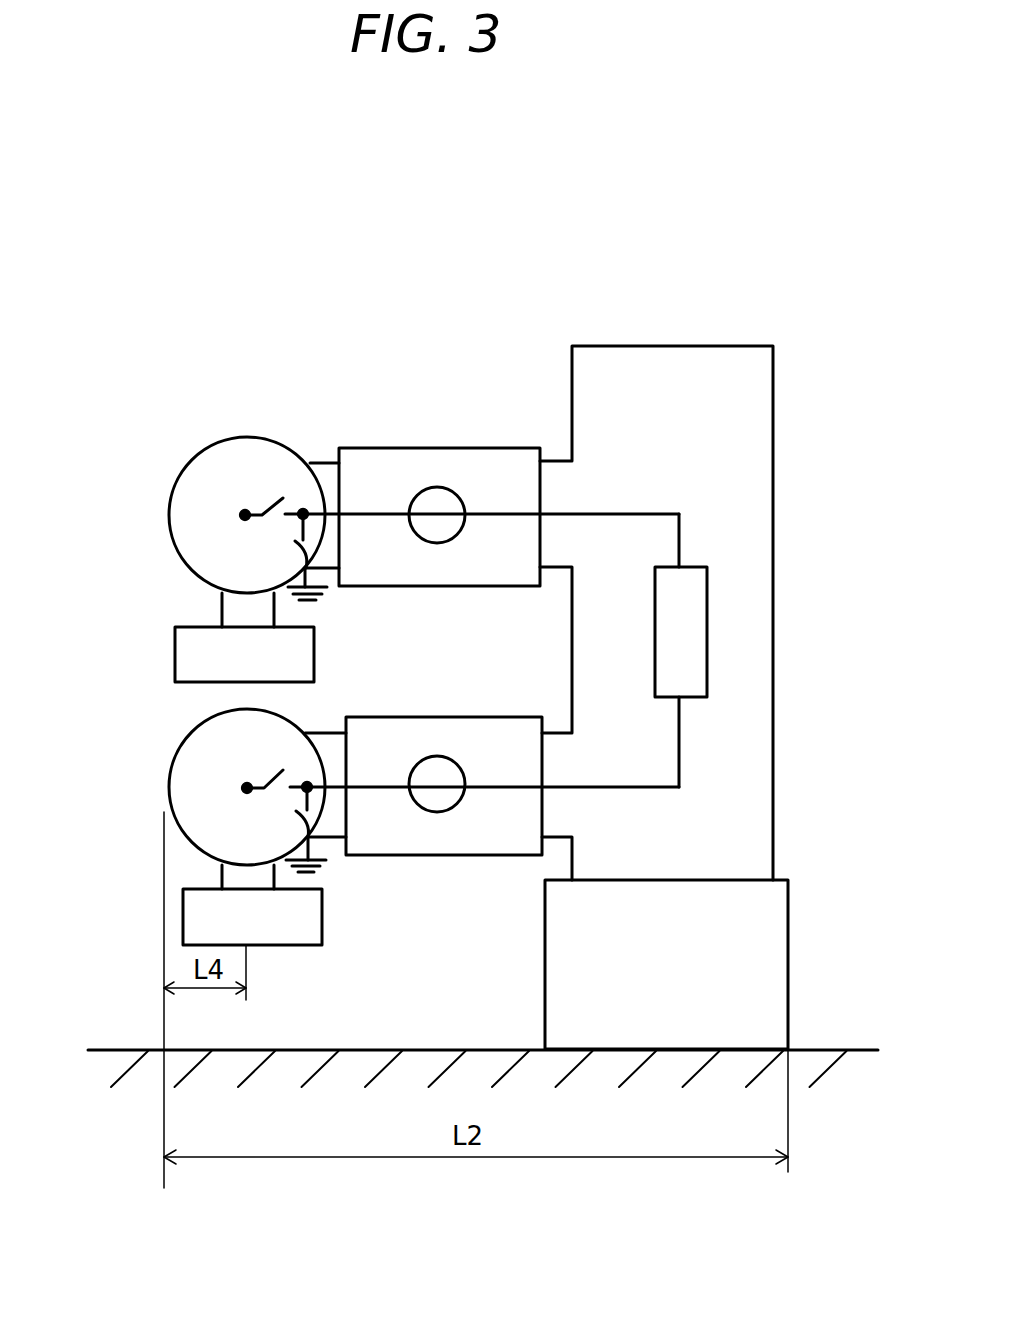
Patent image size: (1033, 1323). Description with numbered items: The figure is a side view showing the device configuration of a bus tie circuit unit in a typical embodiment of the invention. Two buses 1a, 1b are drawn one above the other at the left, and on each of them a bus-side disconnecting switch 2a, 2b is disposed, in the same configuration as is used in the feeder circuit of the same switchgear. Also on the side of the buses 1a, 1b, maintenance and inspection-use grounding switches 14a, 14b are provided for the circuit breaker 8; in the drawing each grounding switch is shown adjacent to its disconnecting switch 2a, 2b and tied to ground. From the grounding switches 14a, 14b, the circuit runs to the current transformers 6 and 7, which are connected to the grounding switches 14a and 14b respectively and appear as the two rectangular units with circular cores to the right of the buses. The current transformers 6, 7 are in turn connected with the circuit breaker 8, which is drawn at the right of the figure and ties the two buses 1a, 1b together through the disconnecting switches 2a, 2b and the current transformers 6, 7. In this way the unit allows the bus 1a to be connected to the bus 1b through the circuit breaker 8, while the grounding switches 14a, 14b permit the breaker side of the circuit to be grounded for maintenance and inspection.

The bus 1a is at (243, 517).
The bus 1b is at (245, 788).
The bus-side disconnecting switch 2a is at (282, 498).
The bus-side disconnecting switch 2b is at (283, 769).
The maintenance and inspection-use grounding switch 14a is at (296, 544).
The maintenance and inspection-use grounding switch 14b is at (297, 813).
The current transformer 6 is at (436, 487).
The current transformer 7 is at (453, 808).
The circuit breaker 8 is at (707, 607).